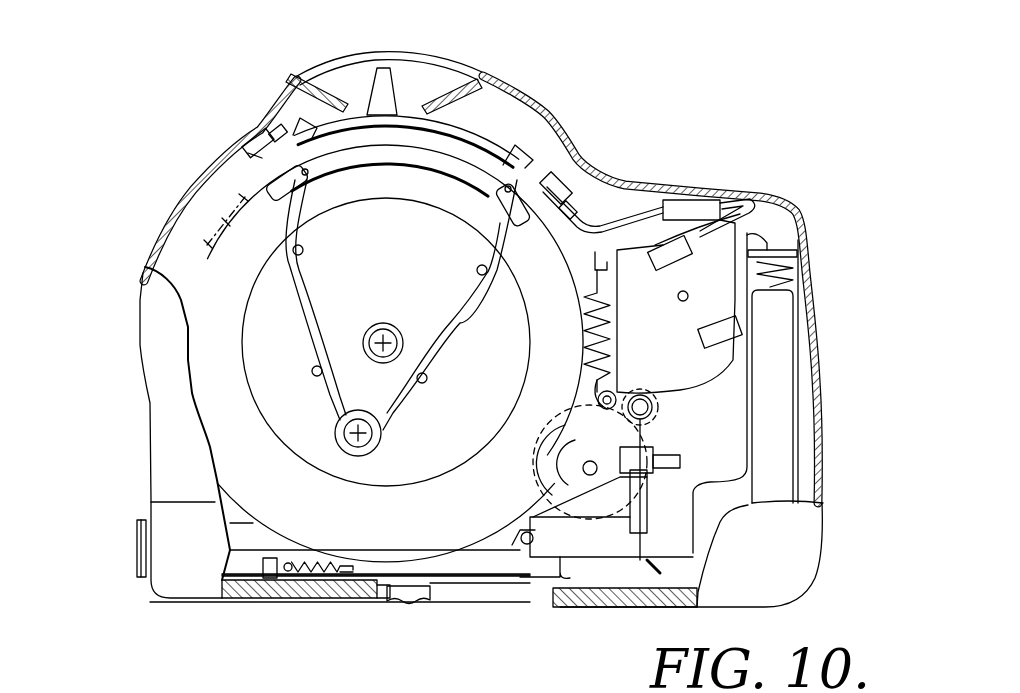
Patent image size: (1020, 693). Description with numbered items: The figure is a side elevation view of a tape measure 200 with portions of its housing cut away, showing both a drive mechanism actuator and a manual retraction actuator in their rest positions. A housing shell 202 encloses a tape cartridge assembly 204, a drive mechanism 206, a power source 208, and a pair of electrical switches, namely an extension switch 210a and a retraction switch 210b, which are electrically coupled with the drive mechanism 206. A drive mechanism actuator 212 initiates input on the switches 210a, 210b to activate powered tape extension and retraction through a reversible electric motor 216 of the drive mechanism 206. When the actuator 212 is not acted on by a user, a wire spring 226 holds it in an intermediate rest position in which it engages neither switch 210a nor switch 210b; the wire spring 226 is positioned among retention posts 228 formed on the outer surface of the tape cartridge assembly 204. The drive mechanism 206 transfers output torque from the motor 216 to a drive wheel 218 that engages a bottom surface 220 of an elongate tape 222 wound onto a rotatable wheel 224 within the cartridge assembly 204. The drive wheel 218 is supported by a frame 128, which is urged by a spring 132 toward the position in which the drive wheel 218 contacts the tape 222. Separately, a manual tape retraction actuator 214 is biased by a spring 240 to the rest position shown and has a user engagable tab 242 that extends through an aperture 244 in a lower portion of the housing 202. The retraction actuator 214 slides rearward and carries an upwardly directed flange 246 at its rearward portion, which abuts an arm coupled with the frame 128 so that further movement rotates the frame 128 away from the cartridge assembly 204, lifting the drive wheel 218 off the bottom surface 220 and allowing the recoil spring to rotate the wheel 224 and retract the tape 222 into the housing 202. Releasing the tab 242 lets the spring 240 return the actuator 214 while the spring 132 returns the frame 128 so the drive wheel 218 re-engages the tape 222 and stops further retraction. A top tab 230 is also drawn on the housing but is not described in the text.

The tape measure 200 is at (110, 447).
The housing shell 202 is at (150, 247).
The tape cartridge assembly 204 is at (190, 295).
The drive mechanism 206 is at (693, 375).
The power source 208 is at (783, 322).
The extension switch 210a is at (258, 130).
The retraction switch 210b is at (560, 187).
The drive mechanism actuator 212 is at (438, 128).
The manual tape retraction actuator 214 is at (380, 586).
The reversible electric motor 216 is at (657, 285).
The drive wheel 218 is at (524, 523).
The bottom surface 220 is at (234, 600).
The elongate tape 222 is at (253, 533).
The rotatable wheel 224 is at (190, 190).
The wire spring 226 is at (320, 314).
The retention posts 228 is at (477, 270).
The tab 230 is at (392, 68).
The spring 240 is at (307, 586).
The user engagable tab 242 is at (424, 607).
The aperture 244 is at (556, 610).
The upwardly directed flange 246 is at (572, 570).
The frame 128 is at (597, 440).
The spring 132 is at (580, 318).